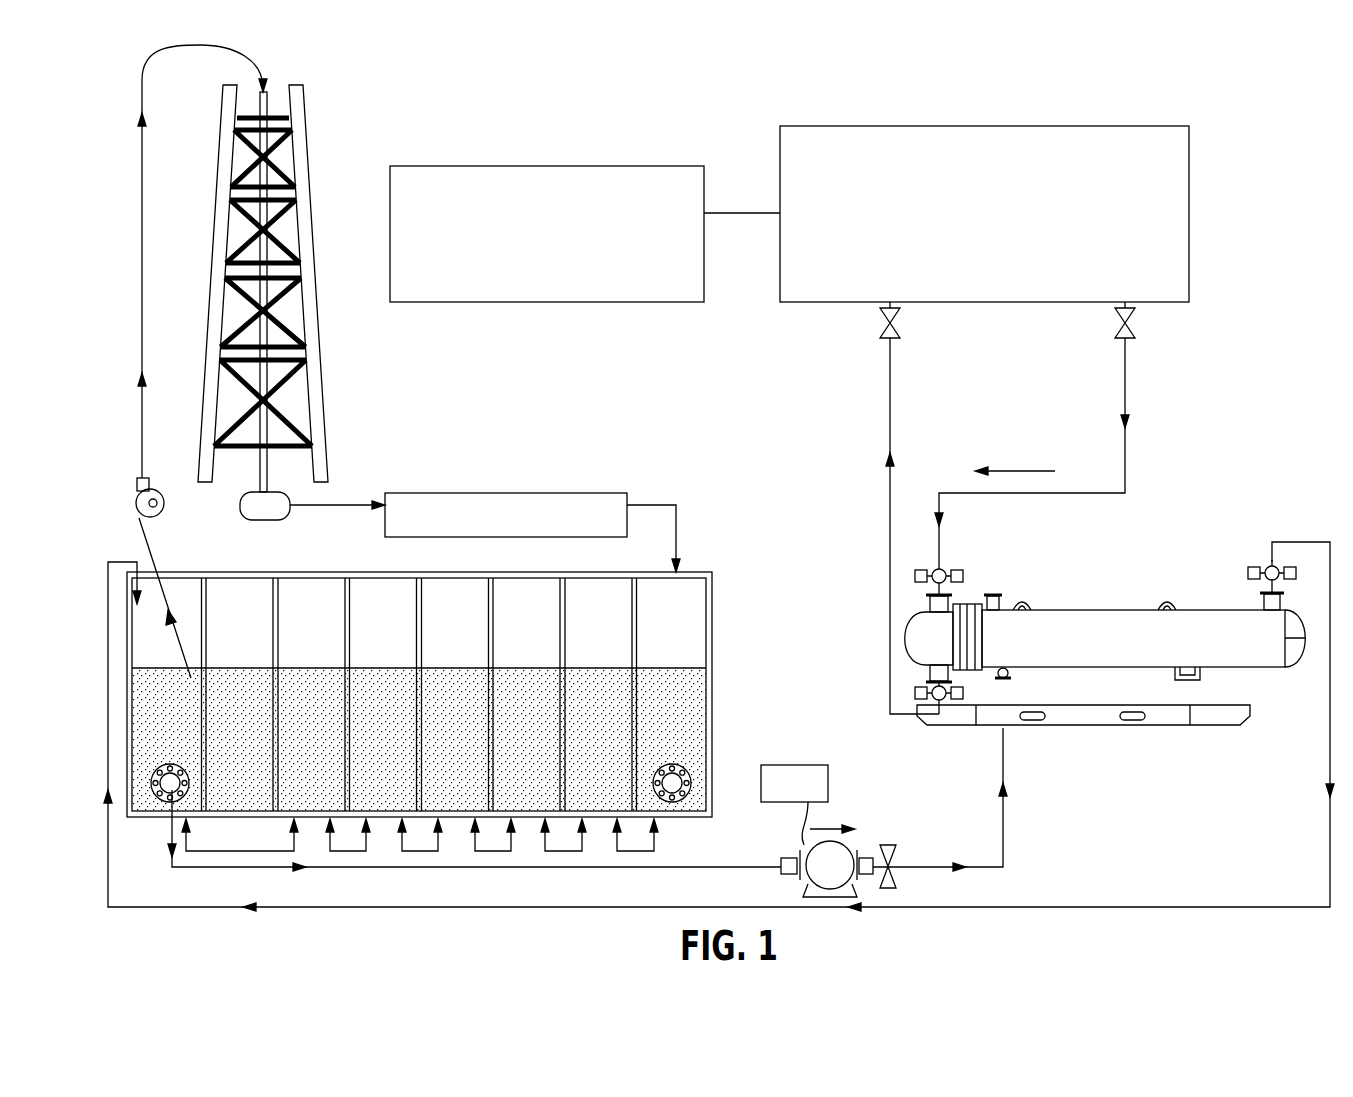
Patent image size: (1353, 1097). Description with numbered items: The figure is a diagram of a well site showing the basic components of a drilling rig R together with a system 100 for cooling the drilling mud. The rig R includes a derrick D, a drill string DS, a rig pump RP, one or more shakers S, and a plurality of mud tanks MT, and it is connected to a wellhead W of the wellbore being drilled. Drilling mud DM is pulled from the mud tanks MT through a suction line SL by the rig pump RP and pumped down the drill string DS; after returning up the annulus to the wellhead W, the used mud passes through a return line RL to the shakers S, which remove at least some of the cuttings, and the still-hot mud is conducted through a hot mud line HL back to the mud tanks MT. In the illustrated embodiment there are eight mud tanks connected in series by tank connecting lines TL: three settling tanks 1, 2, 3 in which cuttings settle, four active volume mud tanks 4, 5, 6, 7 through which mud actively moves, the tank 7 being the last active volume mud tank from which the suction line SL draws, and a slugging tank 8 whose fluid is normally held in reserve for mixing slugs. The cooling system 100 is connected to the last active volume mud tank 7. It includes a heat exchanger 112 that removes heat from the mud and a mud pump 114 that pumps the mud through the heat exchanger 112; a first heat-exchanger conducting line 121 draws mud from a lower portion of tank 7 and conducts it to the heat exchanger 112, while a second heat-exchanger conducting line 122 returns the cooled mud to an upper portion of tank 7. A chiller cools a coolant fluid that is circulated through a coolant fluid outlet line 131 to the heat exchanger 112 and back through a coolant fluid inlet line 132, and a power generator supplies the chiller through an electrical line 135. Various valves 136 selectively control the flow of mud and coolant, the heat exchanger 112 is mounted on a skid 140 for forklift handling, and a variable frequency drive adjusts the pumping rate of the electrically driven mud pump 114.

The system for cooling a drilling mud 100 is at (1230, 216).
The heat exchanger 112 is at (1220, 617).
The mud pump 114 is at (857, 850).
The first heat-exchanger conducting line 121 is at (172, 820).
The second heat-exchanger conducting line 122 is at (1330, 838).
The coolant fluid outlet line 131 is at (1130, 373).
The coolant fluid inlet line 132 is at (895, 398).
The electrical line 135 is at (745, 212).
The valves 136 is at (897, 323).
The skid 140 is at (1208, 727).
The derrick D is at (313, 357).
The drill string DS is at (268, 103).
The rig R is at (340, 108).
The wellhead W is at (250, 497).
The rig pump RP is at (138, 493).
The suction line SL is at (158, 563).
The return line RL is at (337, 529).
The shakers S is at (596, 497).
The hot mud line HL is at (680, 518).
The mud tanks MT is at (712, 600).
The drilling mud DM is at (697, 690).
The tank connecting lines TL is at (652, 848).
The settling tank 1 is at (656, 721).
The settling tank 2 is at (584, 721).
The settling tank 3 is at (513, 721).
The active volume mud tank 4 is at (441, 721).
The active volume mud tank 5 is at (369, 721).
The active volume mud tank 6 is at (297, 721).
The last active volume mud tank 7 is at (154, 721).
The slugging tank 8 is at (226, 721).